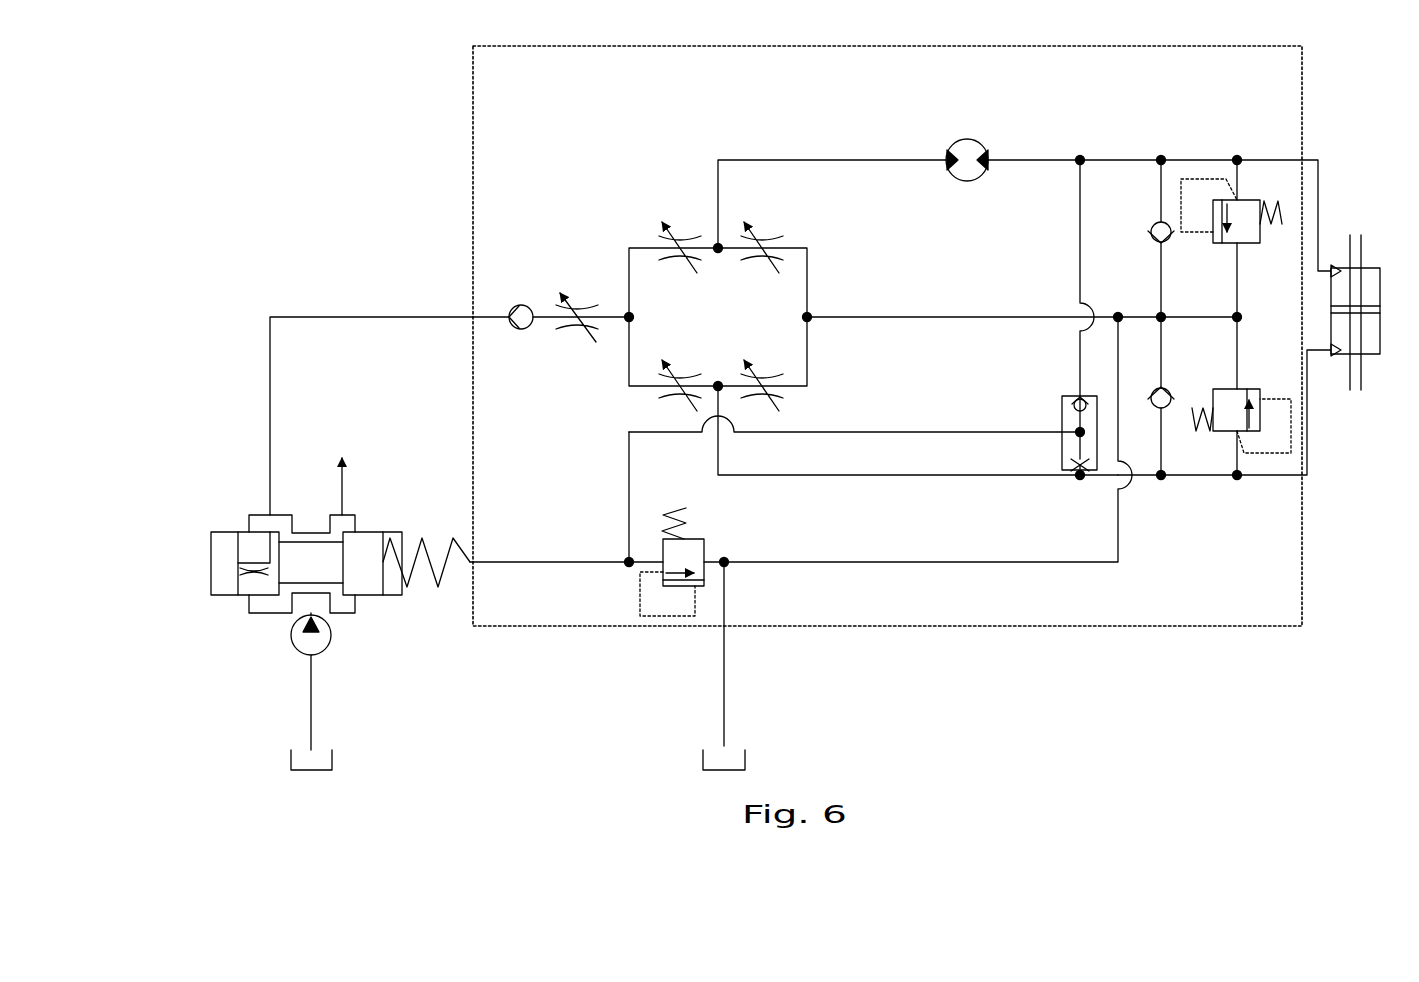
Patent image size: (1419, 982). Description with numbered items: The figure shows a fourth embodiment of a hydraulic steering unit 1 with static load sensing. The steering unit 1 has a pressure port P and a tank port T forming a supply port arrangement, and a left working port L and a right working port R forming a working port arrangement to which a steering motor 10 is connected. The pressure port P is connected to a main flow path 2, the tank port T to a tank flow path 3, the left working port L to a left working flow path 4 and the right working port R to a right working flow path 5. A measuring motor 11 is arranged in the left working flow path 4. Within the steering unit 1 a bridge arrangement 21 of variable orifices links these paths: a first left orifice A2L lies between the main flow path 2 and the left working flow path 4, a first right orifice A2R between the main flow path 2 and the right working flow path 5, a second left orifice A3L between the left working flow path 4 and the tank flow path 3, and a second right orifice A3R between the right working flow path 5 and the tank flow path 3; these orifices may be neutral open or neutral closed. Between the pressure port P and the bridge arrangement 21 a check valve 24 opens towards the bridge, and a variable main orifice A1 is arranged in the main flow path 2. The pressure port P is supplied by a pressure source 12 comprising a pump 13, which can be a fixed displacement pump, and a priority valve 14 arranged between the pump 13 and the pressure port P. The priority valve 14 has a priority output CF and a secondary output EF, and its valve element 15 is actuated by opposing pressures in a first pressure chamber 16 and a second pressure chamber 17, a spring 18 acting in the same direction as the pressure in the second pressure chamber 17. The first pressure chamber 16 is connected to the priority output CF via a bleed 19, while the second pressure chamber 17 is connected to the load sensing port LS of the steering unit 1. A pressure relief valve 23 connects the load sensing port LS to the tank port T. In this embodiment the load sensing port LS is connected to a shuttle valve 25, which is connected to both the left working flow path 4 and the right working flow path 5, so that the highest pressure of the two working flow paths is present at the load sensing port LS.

The steering unit 1 is at (1303, 80).
The main flow path 2 is at (551, 329).
The tank flow path 3 is at (898, 317).
The left working flow path 4 is at (1028, 160).
The right working flow path 5 is at (1196, 478).
The steering motor 10 is at (1371, 275).
The measuring motor 11 is at (967, 148).
The pressure source 12 is at (376, 543).
The pump 13 is at (292, 642).
The priority valve 14 is at (201, 575).
The valve element 15 is at (243, 588).
The first pressure chamber 16 is at (218, 550).
The second pressure chamber 17 is at (394, 535).
The spring 18 is at (415, 533).
The bleed 19 is at (262, 565).
The bridge arrangement 21 is at (693, 298).
The pressure relief valve 23 is at (678, 578).
The check valve 24 is at (519, 331).
The shuttle valve 25 is at (1069, 471).
The pressure port P is at (473, 315).
The tank port T is at (724, 626).
The left working port L is at (1305, 157).
The right working port R is at (1305, 476).
The load sensing port LS is at (472, 564).
The priority output CF is at (270, 514).
The secondary output EF is at (343, 514).
The variable main orifice A1 is at (580, 310).
The first left orifice A2L is at (677, 259).
The second left orifice A3L is at (758, 259).
The first right orifice A2R is at (670, 394).
The second right orifice A3R is at (791, 391).